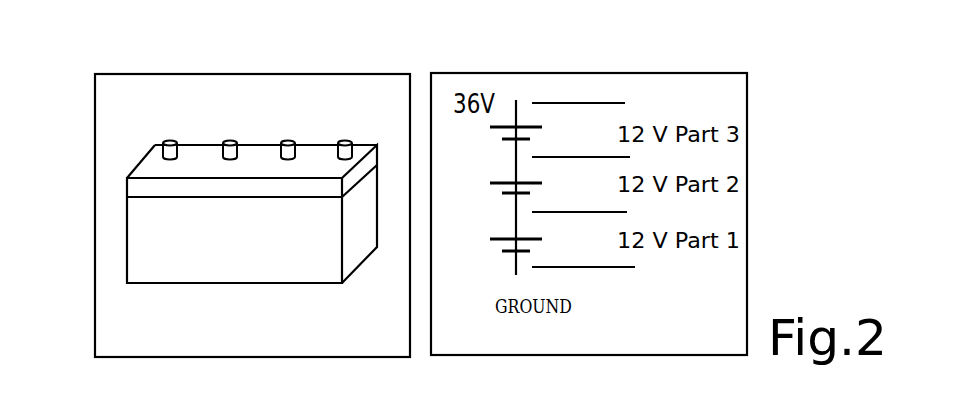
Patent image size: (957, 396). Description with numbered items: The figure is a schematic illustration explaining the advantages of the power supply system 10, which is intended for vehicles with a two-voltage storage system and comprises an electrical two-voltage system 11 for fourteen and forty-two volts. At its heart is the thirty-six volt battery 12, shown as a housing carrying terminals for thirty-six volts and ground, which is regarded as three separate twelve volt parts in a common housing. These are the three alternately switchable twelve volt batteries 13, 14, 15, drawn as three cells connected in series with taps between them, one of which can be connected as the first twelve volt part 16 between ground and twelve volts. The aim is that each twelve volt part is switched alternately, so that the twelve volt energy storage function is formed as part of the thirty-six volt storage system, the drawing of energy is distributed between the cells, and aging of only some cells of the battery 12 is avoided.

The power supply system 10 is at (76, 106).
The electrical 14/42 V two-voltage system 11 is at (241, 270).
The 36 V battery 12 is at (165, 141).
The 12 volt battery 13 is at (288, 139).
The 12 volt battery 14 is at (230, 139).
The 12 volt battery 15 is at (172, 158).
The first 12 volt part 16 is at (288, 158).